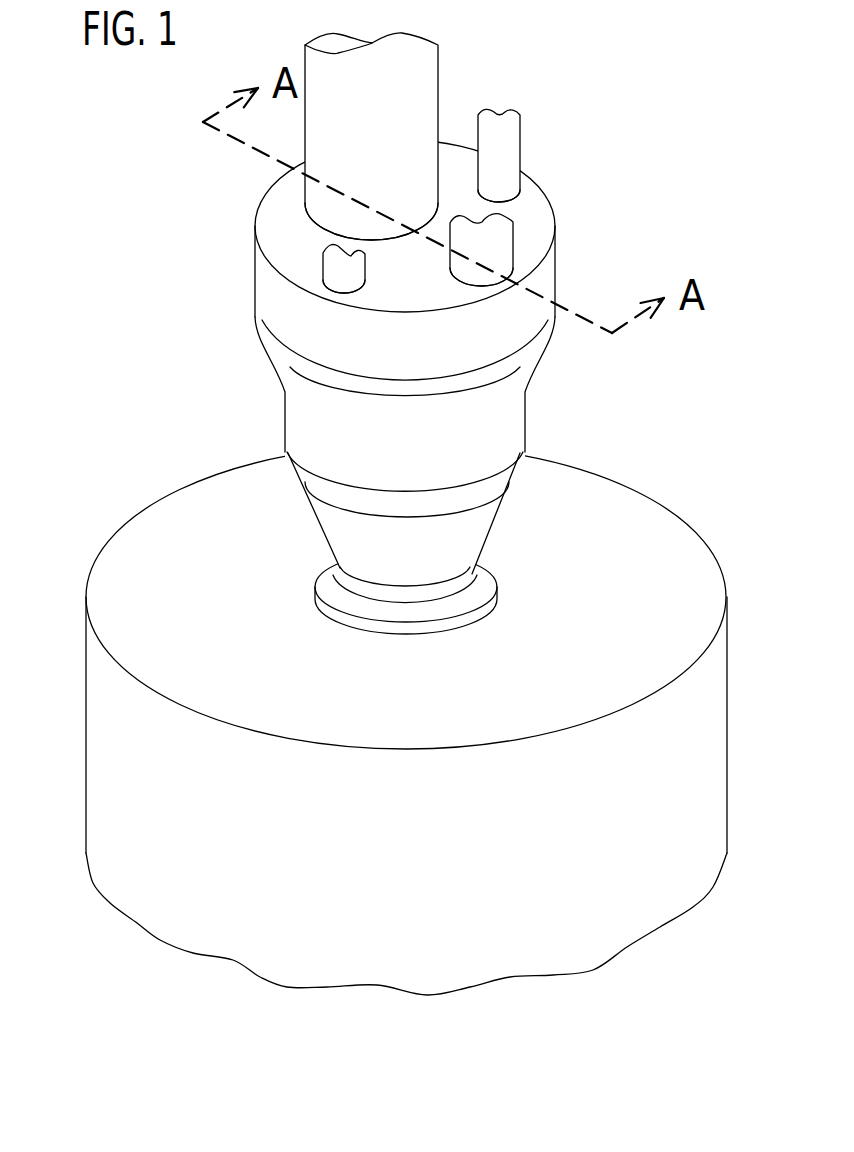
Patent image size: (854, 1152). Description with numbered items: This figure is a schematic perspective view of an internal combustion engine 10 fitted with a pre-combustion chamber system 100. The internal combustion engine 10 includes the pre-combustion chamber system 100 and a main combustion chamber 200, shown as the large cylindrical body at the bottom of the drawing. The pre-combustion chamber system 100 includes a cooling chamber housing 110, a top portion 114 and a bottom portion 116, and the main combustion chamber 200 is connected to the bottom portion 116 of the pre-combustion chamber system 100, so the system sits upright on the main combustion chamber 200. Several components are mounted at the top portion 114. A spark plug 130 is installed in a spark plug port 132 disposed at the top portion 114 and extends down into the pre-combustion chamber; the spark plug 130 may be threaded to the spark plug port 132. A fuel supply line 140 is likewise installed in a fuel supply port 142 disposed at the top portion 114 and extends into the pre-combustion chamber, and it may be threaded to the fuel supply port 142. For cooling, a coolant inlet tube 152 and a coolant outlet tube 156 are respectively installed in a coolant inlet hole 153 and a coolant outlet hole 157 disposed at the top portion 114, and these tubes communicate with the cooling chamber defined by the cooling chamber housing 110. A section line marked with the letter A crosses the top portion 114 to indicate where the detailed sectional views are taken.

The internal combustion engine 10 is at (656, 51).
The pre-combustion chamber system 100 is at (687, 152).
The cooling chamber housing 110 is at (285, 394).
The top portion 114 is at (555, 272).
The bottom portion 116 is at (335, 552).
The spark plug 130 is at (438, 66).
The spark plug port 132 is at (313, 224).
The fuel supply line 140 is at (513, 243).
The fuel supply port 142 is at (470, 287).
The coolant inlet tube 152 is at (323, 268).
The coolant inlet hole 153 is at (346, 293).
The coolant outlet tube 156 is at (521, 125).
The coolant outlet hole 157 is at (512, 197).
The main combustion chamber 200 is at (627, 528).